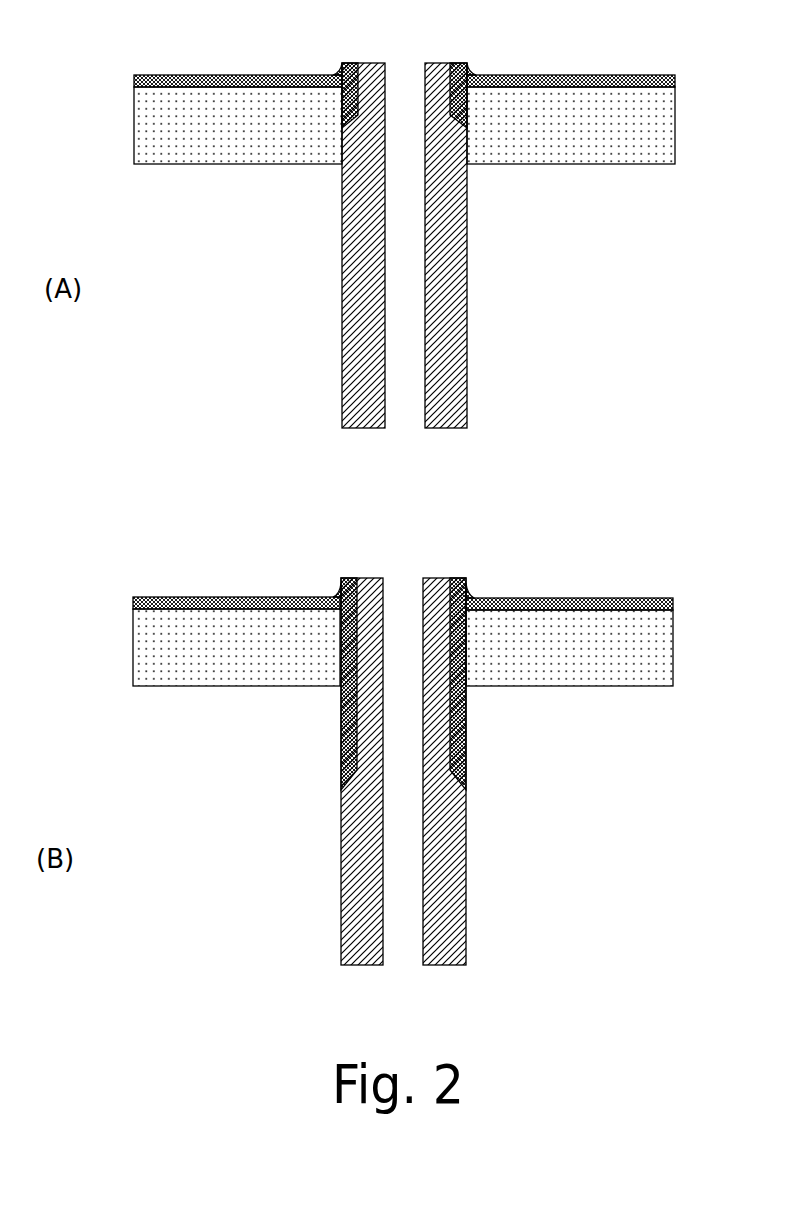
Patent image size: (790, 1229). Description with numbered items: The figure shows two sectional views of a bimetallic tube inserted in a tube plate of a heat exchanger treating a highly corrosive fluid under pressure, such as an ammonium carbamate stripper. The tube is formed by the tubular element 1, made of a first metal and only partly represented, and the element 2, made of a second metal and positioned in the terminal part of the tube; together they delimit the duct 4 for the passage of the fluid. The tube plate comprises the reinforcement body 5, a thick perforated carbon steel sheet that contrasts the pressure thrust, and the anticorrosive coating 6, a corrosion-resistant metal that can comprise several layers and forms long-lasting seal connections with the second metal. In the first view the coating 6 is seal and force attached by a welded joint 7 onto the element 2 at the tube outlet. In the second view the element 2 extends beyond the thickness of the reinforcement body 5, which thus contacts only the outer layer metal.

The tubular element 1 is at (346, 282).
The element 2 is at (346, 63).
The duct 4 is at (416, 200).
The reinforcement body 5 is at (232, 148).
The anticorrosive coating 6 is at (565, 75).
The welded joint 7 is at (338, 72).